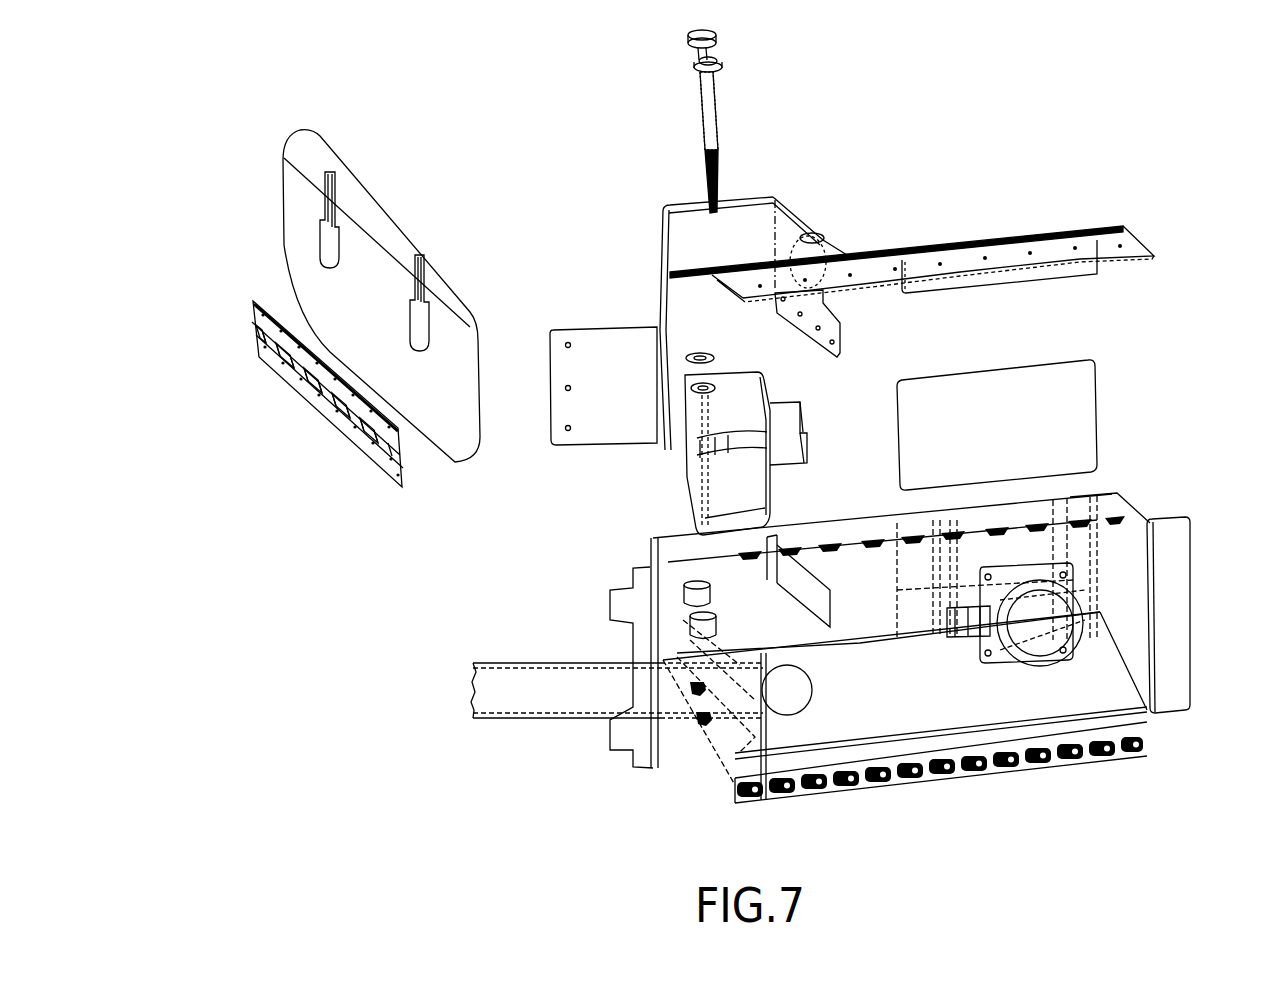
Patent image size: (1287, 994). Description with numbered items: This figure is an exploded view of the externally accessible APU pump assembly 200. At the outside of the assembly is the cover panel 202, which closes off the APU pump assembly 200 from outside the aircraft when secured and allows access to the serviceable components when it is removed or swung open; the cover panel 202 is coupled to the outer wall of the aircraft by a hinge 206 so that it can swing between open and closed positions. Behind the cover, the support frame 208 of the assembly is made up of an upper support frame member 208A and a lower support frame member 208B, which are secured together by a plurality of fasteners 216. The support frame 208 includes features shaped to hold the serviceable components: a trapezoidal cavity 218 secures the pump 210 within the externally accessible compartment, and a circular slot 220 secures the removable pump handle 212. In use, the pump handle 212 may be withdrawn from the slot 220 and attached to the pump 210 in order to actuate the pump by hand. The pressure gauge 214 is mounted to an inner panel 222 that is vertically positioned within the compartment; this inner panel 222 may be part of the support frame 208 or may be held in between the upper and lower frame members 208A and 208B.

The APU pump assembly 200 is at (984, 143).
The cover panel 202 is at (385, 198).
The hinge 206 is at (355, 420).
The support frame 208 is at (868, 240).
The upper support frame member 208A is at (1103, 228).
The lower support frame member 208B is at (1175, 713).
The pump 210 is at (690, 492).
The pump handle 212 is at (547, 663).
The pressure gauge 214 is at (1050, 665).
The fastener 216 is at (718, 145).
The trapezoidal cavity 218 is at (752, 300).
The circular slot 220 is at (760, 682).
The inner panel 222 is at (1100, 420).